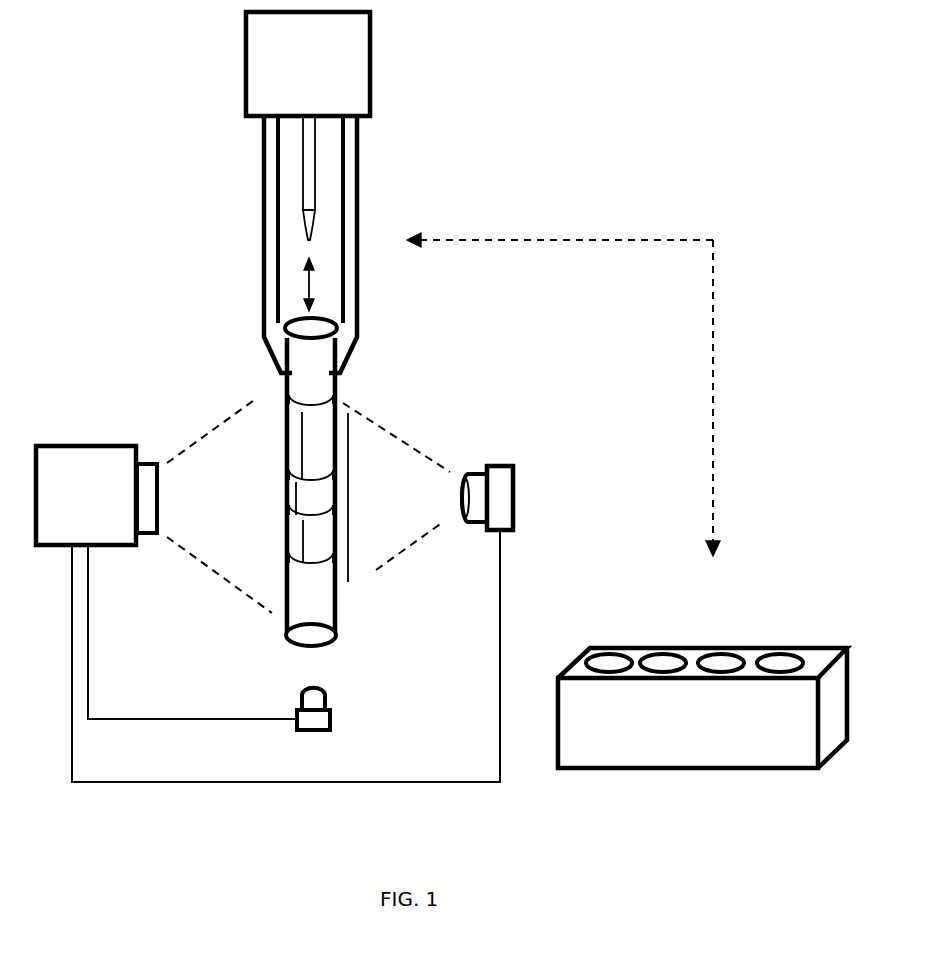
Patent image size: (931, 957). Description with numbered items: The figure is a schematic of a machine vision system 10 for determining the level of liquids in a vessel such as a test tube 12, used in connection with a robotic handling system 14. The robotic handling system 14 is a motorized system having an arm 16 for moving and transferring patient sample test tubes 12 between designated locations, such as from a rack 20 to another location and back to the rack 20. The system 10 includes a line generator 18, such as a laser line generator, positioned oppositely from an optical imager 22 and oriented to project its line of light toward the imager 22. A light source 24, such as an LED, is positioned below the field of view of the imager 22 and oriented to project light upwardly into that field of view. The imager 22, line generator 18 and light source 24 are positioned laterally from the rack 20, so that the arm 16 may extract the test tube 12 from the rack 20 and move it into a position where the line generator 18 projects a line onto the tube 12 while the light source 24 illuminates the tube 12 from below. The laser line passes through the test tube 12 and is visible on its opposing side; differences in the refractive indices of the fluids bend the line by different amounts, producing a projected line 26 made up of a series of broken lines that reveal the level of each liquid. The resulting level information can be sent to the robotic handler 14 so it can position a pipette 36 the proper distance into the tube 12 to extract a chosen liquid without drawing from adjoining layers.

The machine vision system 10 is at (155, 218).
The test tube 12 is at (338, 379).
The robotic handling system 14 is at (244, 76).
The arm 16 is at (264, 298).
The line generator 18 is at (515, 475).
The rack 20 is at (807, 648).
The optical imager 22 is at (84, 446).
The light source 24 is at (332, 718).
The projected line 26 is at (287, 448).
The pipette 36 is at (315, 168).